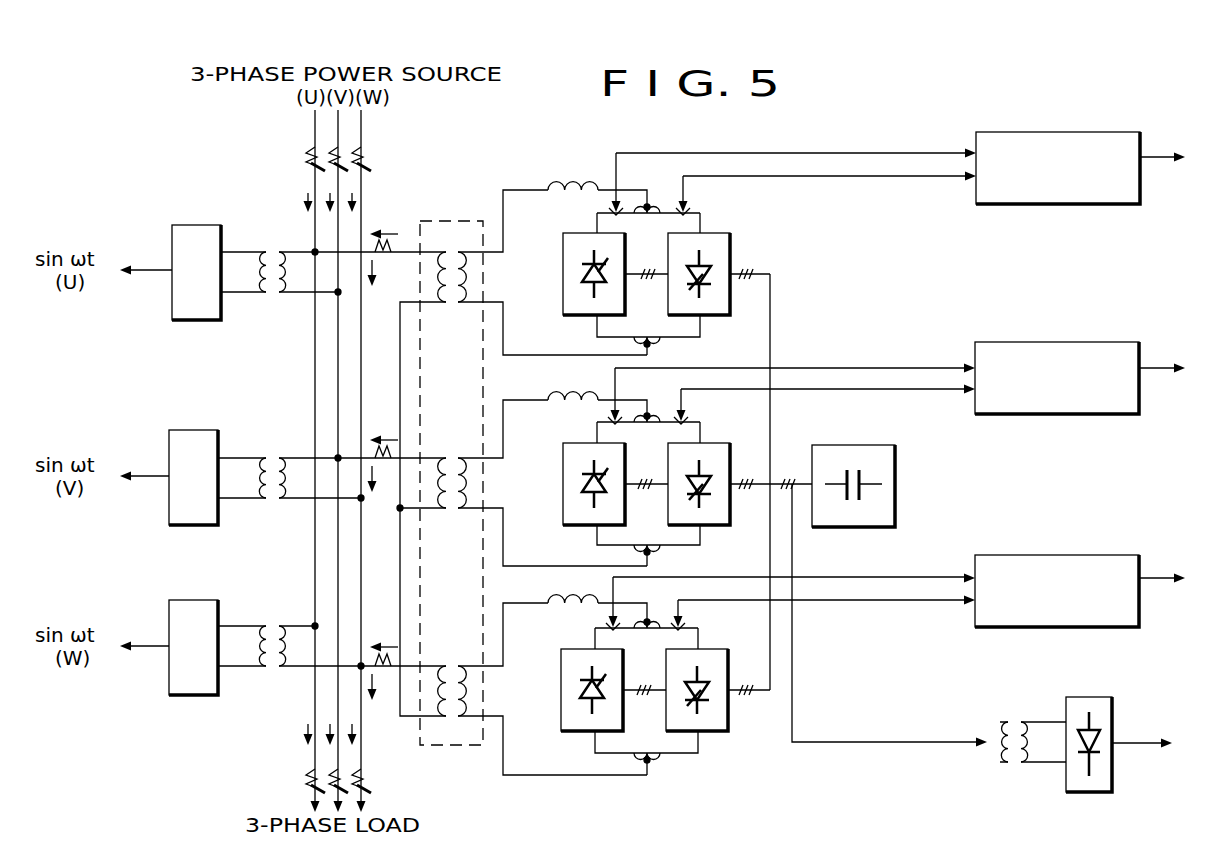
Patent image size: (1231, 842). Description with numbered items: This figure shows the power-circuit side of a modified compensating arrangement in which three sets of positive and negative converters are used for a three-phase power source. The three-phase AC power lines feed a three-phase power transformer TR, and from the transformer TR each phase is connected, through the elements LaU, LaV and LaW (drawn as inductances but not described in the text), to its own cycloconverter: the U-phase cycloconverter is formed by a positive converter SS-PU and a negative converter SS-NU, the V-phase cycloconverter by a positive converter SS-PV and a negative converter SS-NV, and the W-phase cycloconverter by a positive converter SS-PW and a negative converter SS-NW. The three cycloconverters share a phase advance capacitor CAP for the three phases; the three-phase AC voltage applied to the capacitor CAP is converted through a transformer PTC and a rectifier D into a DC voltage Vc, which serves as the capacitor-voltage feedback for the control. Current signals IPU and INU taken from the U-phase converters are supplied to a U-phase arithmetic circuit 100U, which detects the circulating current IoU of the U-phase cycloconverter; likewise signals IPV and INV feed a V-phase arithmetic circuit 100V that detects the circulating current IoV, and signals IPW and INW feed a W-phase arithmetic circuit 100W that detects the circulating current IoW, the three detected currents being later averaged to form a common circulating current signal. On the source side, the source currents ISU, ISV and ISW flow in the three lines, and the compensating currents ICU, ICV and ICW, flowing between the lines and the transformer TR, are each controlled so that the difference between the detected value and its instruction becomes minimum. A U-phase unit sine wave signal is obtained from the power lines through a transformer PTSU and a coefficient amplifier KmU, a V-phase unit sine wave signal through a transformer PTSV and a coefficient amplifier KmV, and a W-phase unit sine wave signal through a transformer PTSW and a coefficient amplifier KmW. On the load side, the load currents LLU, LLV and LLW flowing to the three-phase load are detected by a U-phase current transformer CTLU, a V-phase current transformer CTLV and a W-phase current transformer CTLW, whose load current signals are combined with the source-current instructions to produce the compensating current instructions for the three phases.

The coefficient amplifier KmU is at (192, 224).
The coefficient amplifier KmV is at (189, 429).
The coefficient amplifier KmW is at (189, 599).
The transformer PTSU is at (269, 296).
The transformer PTSV is at (269, 502).
The transformer PTSW is at (266, 670).
The U-phase source current ISU is at (307, 215).
The V-phase source current ISV is at (325, 214).
The W-phase source current ISW is at (356, 212).
The U-phase compensating current ICU is at (385, 247).
The V-phase compensating current ICV is at (378, 436).
The W-phase compensating current ICW is at (378, 640).
The three-phase power transformer TR is at (522, 482).
The U-phase reactor LaU is at (599, 180).
The V-phase reactor LaV is at (599, 391).
The W-phase reactor LaW is at (599, 598).
The positive converter SS-PU is at (563, 262).
The negative converter SS-NU is at (734, 248).
The positive converter SS-PV is at (563, 472).
The negative converter SS-NV is at (707, 527).
The positive converter SS-PW is at (560, 692).
The negative converter SS-NW is at (713, 733).
The U-phase positive current signal IPU is at (702, 153).
The U-phase negative current signal INU is at (790, 176).
The V-phase positive current signal IPV is at (804, 360).
The V-phase negative current signal INV is at (878, 389).
The W-phase positive current signal IPW is at (817, 577).
The W-phase negative current signal INW is at (890, 602).
The U-phase arithmetic circuit 100U is at (1078, 132).
The V-phase arithmetic circuit 100V is at (1082, 325).
The W-phase arithmetic circuit 100W is at (1060, 555).
The circulating current IoU is at (1180, 158).
The circulating current IoV is at (1179, 369).
The circulating current IoW is at (1182, 579).
The phase advance capacitor CAP is at (896, 470).
The transformer PTC is at (1018, 718).
The rectifier D is at (1100, 700).
The DC voltage Vc is at (1158, 744).
The U-phase load current LLU is at (303, 739).
The V-phase load current LLV is at (322, 753).
The W-phase load current LLW is at (350, 712).
The U-phase current transformer CTLU is at (308, 777).
The V-phase current transformer CTLV is at (322, 787).
The W-phase current transformer CTLW is at (370, 778).